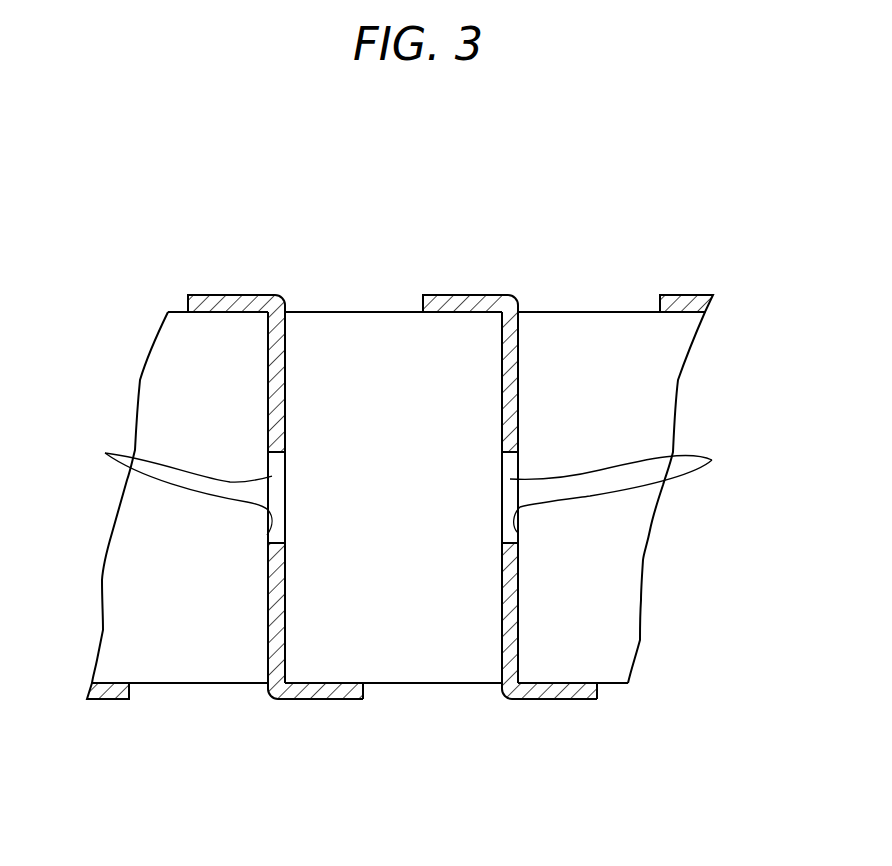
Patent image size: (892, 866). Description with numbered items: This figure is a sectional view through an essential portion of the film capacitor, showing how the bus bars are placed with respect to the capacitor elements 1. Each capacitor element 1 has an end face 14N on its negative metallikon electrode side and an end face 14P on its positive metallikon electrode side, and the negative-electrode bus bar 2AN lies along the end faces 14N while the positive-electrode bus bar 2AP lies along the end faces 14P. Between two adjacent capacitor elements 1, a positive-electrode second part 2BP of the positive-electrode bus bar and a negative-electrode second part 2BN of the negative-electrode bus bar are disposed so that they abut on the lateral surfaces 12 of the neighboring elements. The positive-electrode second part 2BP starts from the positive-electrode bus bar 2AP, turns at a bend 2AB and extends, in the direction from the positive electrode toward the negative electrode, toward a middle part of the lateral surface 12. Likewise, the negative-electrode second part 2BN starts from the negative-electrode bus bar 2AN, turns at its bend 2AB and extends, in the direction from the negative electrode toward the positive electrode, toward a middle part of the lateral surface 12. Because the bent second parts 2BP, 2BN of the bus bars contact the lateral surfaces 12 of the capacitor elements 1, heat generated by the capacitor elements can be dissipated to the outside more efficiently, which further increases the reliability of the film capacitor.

The capacitor element 1 is at (131, 532).
The lateral surface 12 is at (409, 490).
The end face on negative metallikon electrode side 14N is at (392, 312).
The end face on positive metallikon electrode side 14P is at (398, 683).
The negative-electrode bus bar 2AN is at (208, 305).
The bend 2AB is at (270, 303).
The positive-electrode bus bar 2AP is at (113, 700).
The negative-electrode second part 2BN is at (285, 378).
The positive-electrode second part 2BP is at (276, 631).